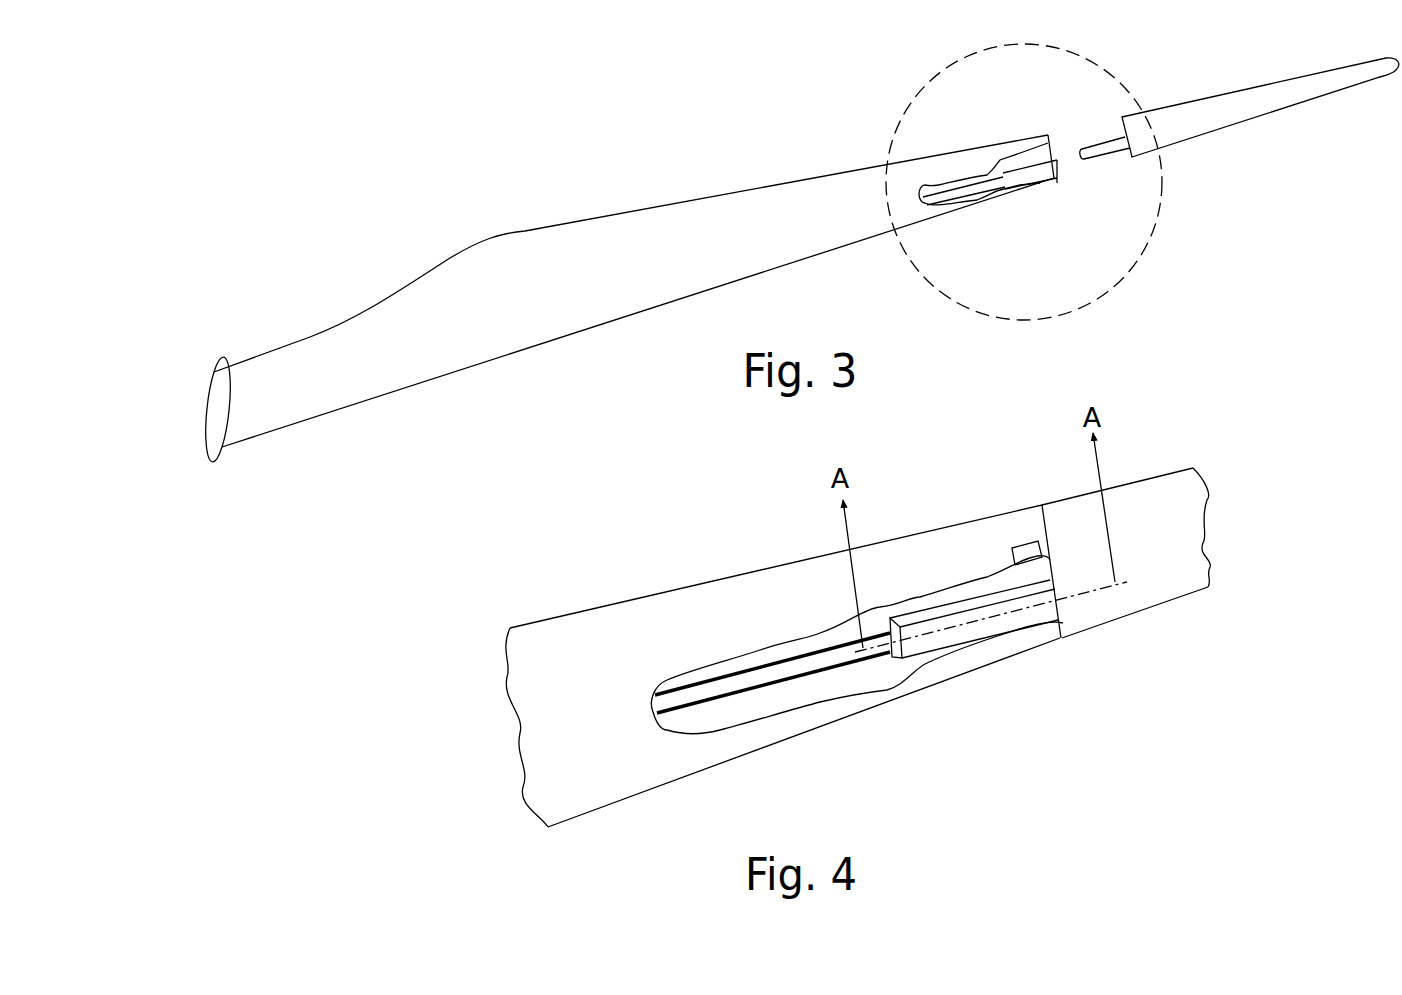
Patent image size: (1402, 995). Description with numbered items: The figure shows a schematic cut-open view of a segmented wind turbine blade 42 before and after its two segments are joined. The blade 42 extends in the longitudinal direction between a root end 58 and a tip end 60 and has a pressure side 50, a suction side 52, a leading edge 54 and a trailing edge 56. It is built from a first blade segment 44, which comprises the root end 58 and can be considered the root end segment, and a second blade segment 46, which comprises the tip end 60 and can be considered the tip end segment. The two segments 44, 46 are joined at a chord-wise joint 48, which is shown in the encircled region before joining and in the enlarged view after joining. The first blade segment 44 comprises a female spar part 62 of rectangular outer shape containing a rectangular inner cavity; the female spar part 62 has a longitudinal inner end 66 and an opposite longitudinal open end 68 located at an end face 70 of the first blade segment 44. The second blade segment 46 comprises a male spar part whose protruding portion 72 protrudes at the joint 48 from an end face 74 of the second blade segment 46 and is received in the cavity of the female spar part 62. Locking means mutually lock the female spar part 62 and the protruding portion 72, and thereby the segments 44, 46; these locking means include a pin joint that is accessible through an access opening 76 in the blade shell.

In FIG. 3, the segmented wind turbine blade 42 is at (365, 252).
In FIG. 4, the segmented wind turbine blade 42 is at (500, 620).
In FIG. 3, the first blade segment 44 is at (310, 335).
In FIG. 4, the first blade segment 44 is at (602, 608).
In FIG. 3, the second blade segment 46 is at (1172, 100).
In FIG. 4, the second blade segment 46 is at (1172, 472).
In FIG. 4, the chord-wise joint 48 is at (1053, 630).
In FIG. 3, the pressure side 50 is at (222, 417).
In FIG. 4, the pressure side 50 is at (535, 745).
In FIG. 3, the suction side 52 is at (207, 423).
In FIG. 4, the leading edge 54 is at (972, 673).
In FIG. 4, the trailing edge 56 is at (725, 578).
In FIG. 3, the root end 58 is at (233, 380).
In FIG. 3, the tip end 60 is at (1336, 80).
In FIG. 3, the female spar part 62 is at (1037, 170).
In FIG. 4, the female spar part 62 is at (987, 630).
In FIG. 3, the longitudinal inner end 66 is at (1000, 178).
In FIG. 4, the longitudinal inner end 66 is at (892, 660).
In FIG. 3, the longitudinal open end 68 is at (1058, 160).
In FIG. 4, the longitudinal open end 68 is at (1067, 600).
In FIG. 3, the end face 70 is at (1052, 137).
In FIG. 4, the end face 70 is at (1062, 612).
In FIG. 3, the protruding portion 72 is at (1100, 150).
In FIG. 3, the end face 74 is at (1122, 130).
In FIG. 4, the end face 74 is at (1040, 515).
In FIG. 4, the access opening 76 is at (1022, 552).